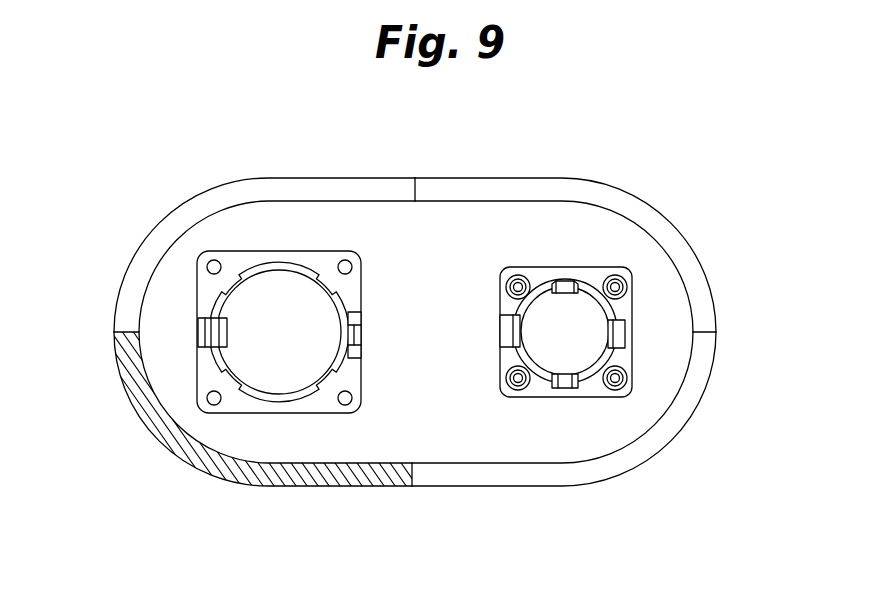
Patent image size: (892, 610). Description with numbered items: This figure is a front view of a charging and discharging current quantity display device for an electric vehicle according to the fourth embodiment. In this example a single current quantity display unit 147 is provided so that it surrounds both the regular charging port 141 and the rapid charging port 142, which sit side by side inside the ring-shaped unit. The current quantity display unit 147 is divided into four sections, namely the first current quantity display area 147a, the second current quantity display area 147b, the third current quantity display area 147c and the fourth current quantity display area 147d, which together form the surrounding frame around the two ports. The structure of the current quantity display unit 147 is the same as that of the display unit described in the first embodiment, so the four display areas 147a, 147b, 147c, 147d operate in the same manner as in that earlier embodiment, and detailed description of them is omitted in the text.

The regular charging port 141 is at (275, 355).
The rapid charging port 142 is at (573, 346).
The current quantity display unit 147 is at (387, 305).
The first current quantity display area 147a is at (181, 447).
The second current quantity display area 147b is at (139, 268).
The third current quantity display area 147c is at (571, 198).
The fourth current quantity display area 147d is at (650, 447).